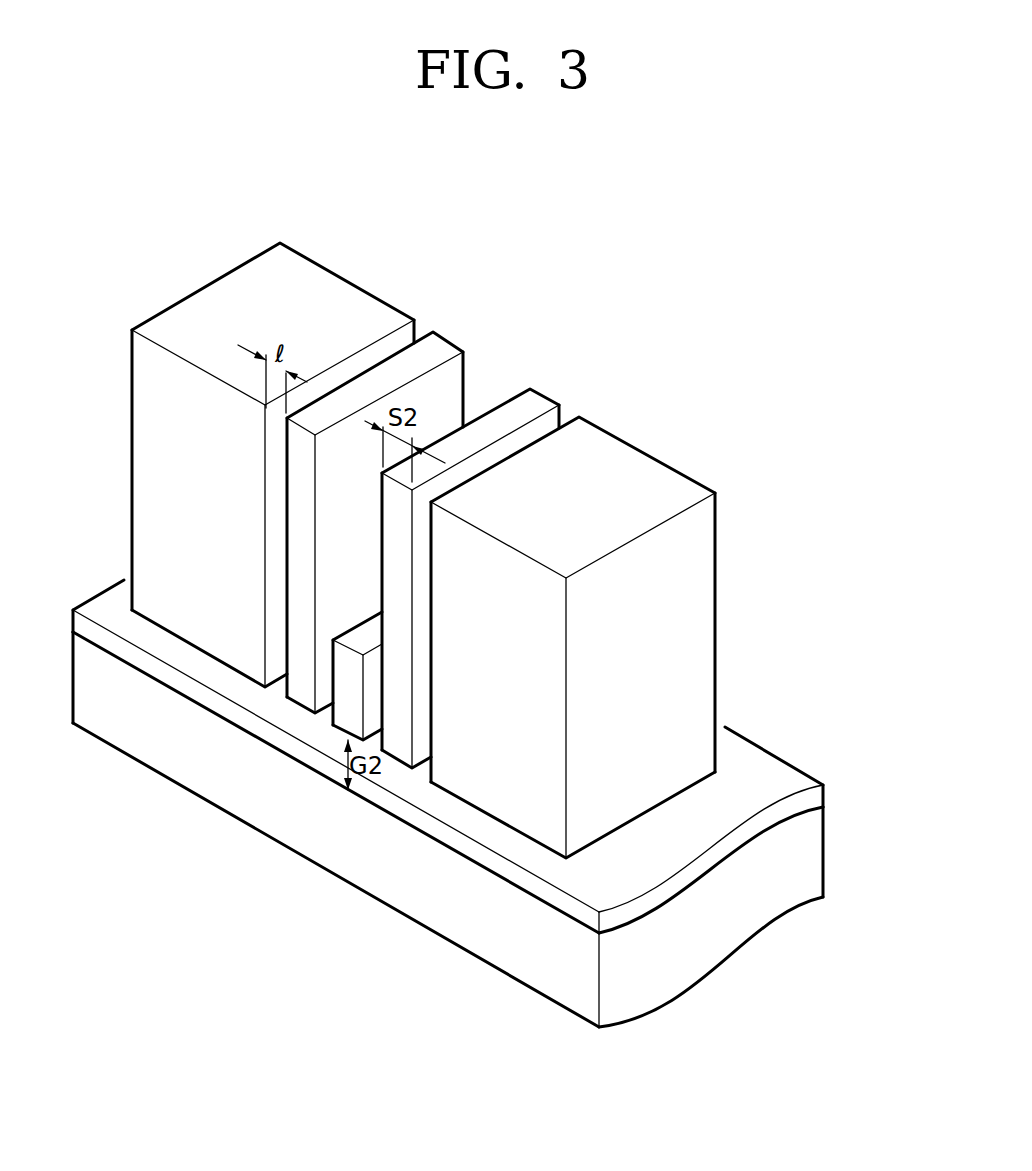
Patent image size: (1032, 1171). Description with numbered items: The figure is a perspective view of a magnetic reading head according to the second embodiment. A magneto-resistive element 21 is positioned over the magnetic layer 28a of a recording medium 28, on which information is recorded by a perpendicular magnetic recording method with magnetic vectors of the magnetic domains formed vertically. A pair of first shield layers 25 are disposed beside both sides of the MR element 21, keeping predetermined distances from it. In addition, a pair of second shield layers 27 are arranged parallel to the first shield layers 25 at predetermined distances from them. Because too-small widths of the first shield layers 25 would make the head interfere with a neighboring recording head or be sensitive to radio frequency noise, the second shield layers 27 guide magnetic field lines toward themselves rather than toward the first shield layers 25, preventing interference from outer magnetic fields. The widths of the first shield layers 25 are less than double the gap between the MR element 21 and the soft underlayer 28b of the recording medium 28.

The magneto-resistive element 21 is at (343, 703).
The first shield layers 25 is at (437, 352).
The second shield layers 27 is at (350, 292).
The recording medium 28 is at (494, 803).
The magnetic layer 28a is at (813, 799).
The soft underlayer 28b is at (813, 857).